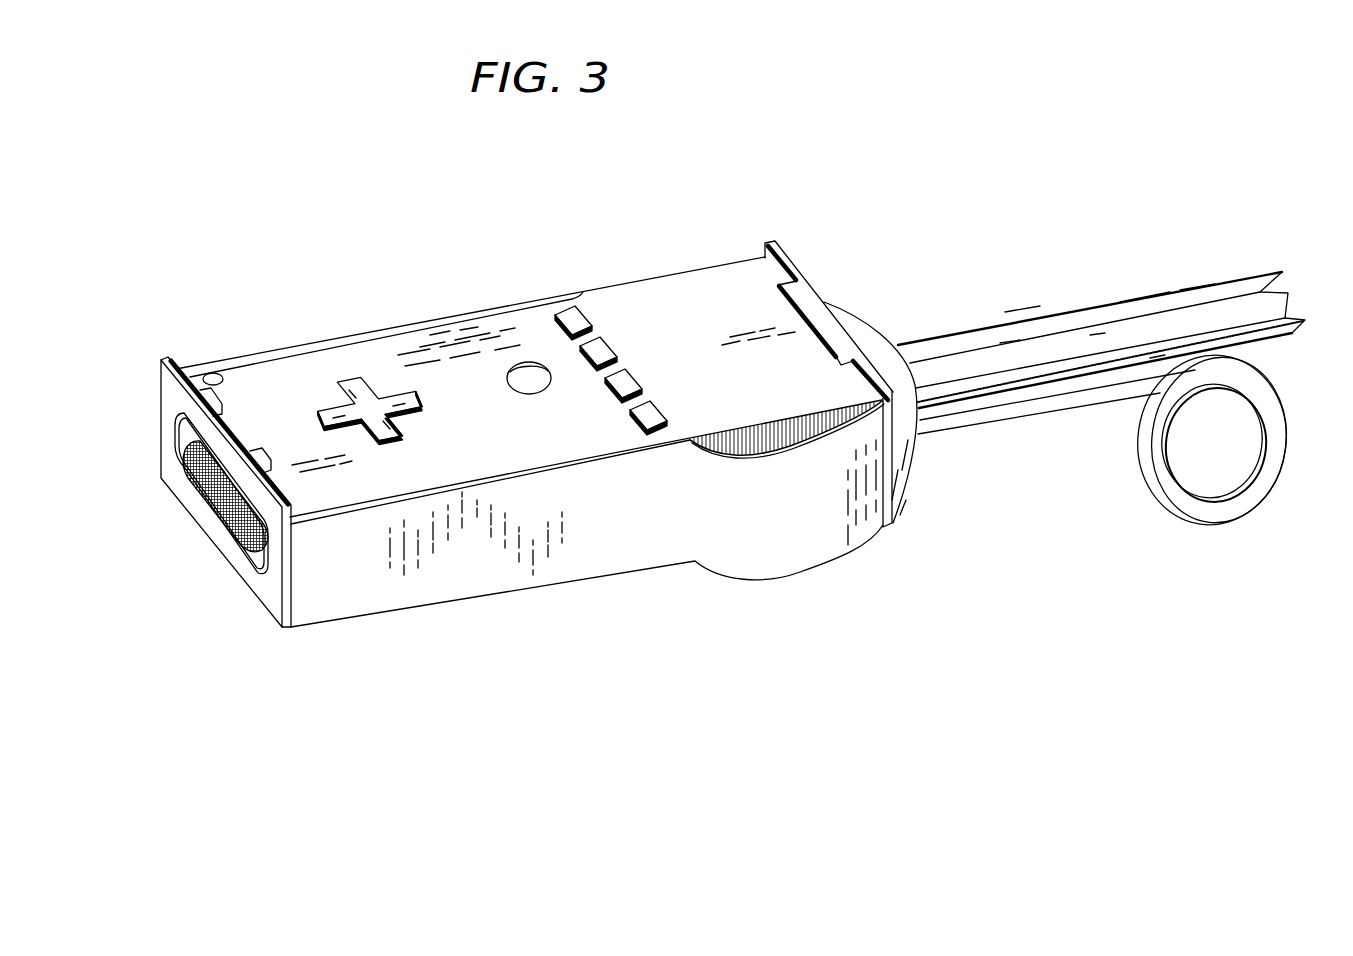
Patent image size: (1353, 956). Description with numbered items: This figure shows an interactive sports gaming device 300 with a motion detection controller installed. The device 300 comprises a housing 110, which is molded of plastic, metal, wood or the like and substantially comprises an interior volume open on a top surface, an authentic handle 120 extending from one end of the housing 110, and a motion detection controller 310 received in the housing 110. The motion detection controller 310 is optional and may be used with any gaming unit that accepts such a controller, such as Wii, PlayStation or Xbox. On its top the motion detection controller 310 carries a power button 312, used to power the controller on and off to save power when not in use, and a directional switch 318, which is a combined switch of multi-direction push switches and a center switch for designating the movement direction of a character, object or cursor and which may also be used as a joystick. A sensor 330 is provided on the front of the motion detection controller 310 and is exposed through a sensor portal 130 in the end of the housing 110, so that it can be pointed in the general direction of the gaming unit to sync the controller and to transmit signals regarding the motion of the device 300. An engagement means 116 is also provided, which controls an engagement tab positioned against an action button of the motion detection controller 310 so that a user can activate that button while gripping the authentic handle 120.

The interactive sports gaming device 300 is at (556, 143).
The housing 110 is at (450, 590).
The motion detection controller 310 is at (532, 322).
The power button 312 is at (212, 374).
The directional switch 318 is at (347, 380).
The sensor portal 130 is at (238, 555).
The sensor 330 is at (215, 485).
The authentic handle 120 is at (1085, 328).
The engagement means 116 is at (1172, 507).